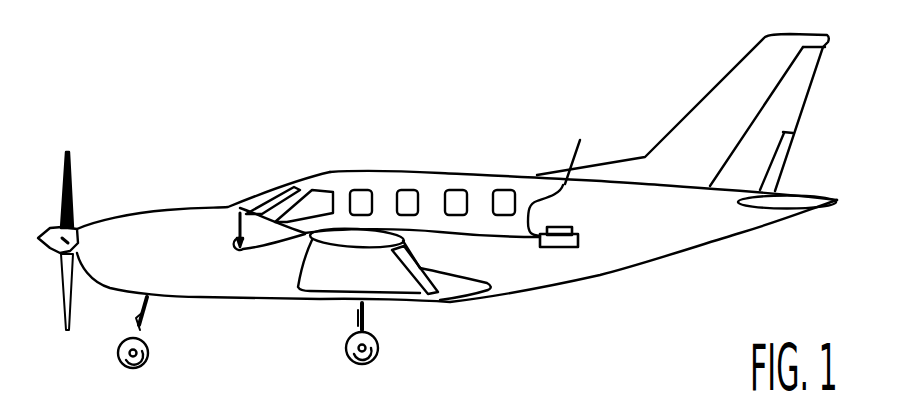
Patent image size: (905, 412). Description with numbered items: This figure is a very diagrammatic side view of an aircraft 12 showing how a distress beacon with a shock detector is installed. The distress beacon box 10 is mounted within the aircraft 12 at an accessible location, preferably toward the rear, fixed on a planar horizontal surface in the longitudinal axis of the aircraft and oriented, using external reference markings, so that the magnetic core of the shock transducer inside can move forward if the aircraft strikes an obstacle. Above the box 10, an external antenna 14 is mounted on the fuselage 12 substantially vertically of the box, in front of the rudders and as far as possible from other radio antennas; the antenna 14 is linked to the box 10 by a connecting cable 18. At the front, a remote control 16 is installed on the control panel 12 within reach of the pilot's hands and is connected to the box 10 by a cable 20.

The distress beacon box 10 is at (560, 250).
The aircraft 12 is at (376, 171).
The external antenna 14 is at (581, 141).
The remote control 16 is at (208, 207).
The connecting cable 18 is at (563, 185).
The cable 20 is at (250, 246).